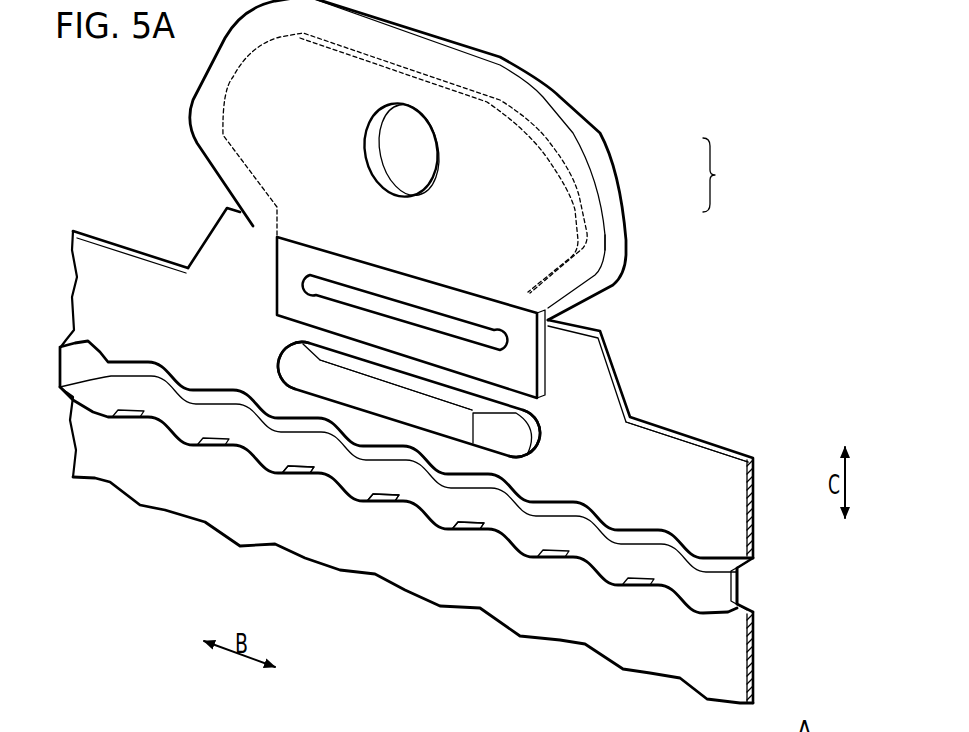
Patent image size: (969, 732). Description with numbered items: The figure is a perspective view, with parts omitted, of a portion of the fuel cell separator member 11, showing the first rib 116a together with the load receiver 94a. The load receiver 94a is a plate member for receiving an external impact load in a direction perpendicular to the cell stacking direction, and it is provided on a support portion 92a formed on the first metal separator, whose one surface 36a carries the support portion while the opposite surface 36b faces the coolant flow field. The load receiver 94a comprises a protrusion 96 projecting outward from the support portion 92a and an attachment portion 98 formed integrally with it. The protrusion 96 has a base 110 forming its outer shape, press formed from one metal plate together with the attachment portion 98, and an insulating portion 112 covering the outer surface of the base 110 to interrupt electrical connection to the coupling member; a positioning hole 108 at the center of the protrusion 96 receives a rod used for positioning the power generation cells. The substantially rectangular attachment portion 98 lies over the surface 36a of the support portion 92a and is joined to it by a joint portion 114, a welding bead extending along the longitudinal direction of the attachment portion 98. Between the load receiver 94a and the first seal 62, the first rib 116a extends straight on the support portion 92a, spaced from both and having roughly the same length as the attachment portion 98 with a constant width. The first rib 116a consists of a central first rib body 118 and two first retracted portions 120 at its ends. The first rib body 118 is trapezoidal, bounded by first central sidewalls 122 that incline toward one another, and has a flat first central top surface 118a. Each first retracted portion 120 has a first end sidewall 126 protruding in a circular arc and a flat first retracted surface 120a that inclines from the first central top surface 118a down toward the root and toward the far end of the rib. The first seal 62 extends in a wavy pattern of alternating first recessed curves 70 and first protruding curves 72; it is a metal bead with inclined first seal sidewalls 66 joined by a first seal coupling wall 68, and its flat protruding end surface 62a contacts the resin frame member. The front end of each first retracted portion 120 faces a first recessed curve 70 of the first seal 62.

The fuel cell separator member 11 is at (100, 230).
The surface of the first metal separator 36a is at (717, 467).
The surface of the first metal separator 36b is at (665, 453).
The first seal 62 is at (167, 435).
The protruding end surface 62a is at (627, 575).
The first seal sidewall 66 is at (742, 607).
The first seal coupling wall 68 is at (728, 589).
The first recessed curve 70 is at (622, 536).
The first protruding curve 72 is at (664, 528).
The support portion 92a is at (213, 242).
The load receiver 94a is at (580, 87).
The protrusion 96 is at (722, 175).
The attachment portion 98 is at (287, 283).
The positioning hole 108 is at (368, 138).
The base 110 is at (567, 167).
The insulating portion 112 is at (600, 193).
The joint portion 114 is at (321, 283).
The first rib 116a is at (523, 241).
The first rib body 118 is at (427, 383).
The first central top surface 118a is at (435, 420).
The first retracted portion 120 is at (320, 392).
The first retracted surface 120a is at (297, 378).
The first central sidewall 122 is at (385, 375).
The first end sidewall 126 is at (300, 346).